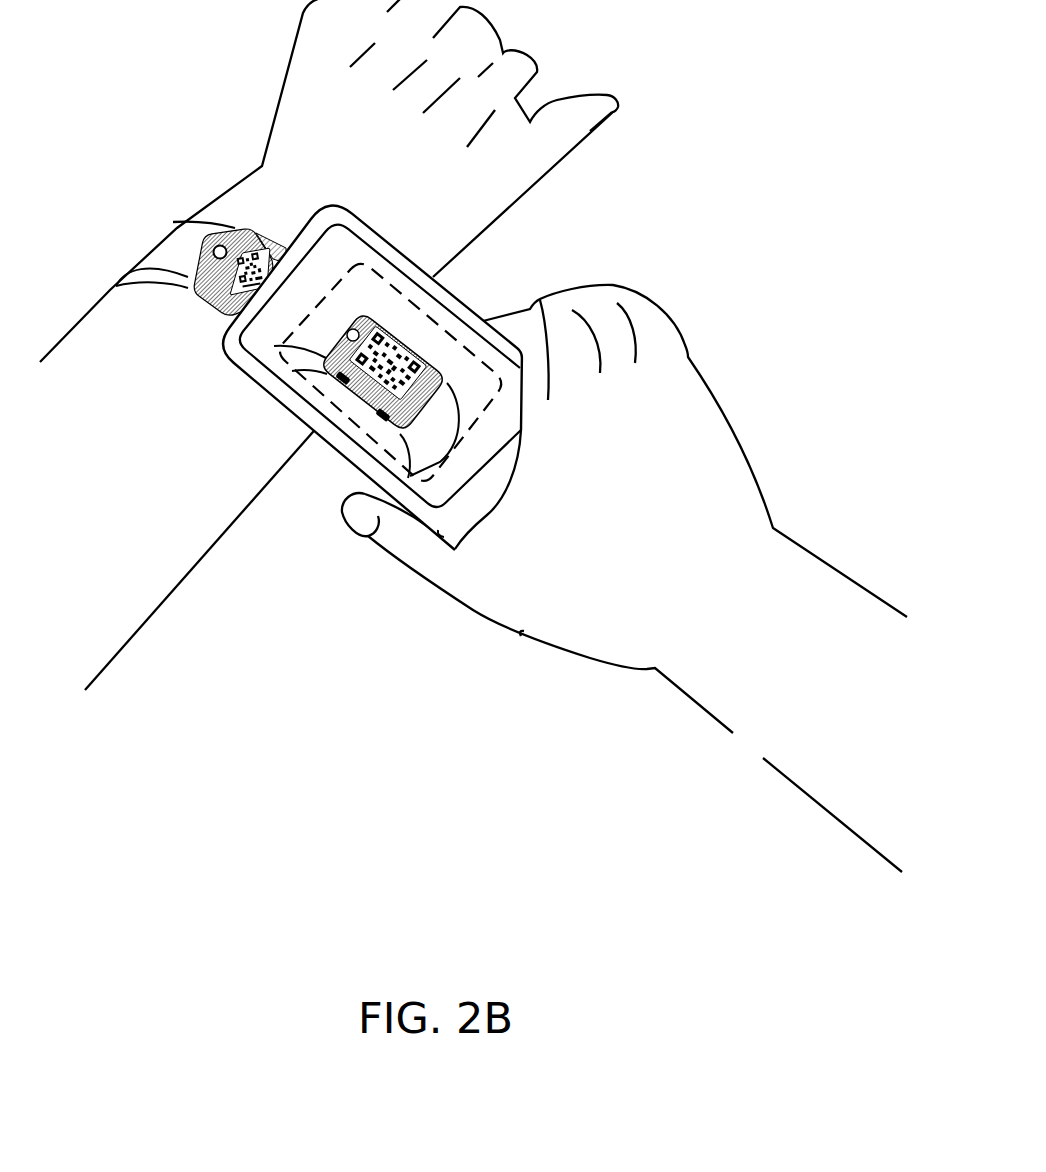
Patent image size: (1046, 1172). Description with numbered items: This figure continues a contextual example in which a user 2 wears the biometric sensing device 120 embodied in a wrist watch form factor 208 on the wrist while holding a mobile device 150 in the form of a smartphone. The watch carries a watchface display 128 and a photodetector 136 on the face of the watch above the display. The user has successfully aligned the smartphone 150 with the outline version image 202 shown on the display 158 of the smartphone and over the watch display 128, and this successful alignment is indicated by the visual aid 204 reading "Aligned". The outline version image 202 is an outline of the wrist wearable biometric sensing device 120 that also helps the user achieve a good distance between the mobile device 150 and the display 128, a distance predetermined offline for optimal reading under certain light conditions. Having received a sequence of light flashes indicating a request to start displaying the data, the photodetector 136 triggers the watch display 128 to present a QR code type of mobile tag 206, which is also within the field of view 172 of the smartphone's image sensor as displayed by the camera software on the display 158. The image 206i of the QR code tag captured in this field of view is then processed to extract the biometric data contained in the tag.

The user 2 is at (200, 560).
The biometric sensing device 120 is at (215, 262).
The watchface display 128 is at (231, 266).
The photodetector 136 is at (204, 266).
The mobile device 150 is at (381, 376).
The display 158 is at (363, 355).
The field of view 172 is at (373, 267).
The outline version image 202 is at (332, 411).
The visual aid 204 is at (225, 330).
The mobile tag 206 is at (227, 291).
The image of code 206i is at (368, 375).
The wrist watch form factor 208 is at (235, 229).